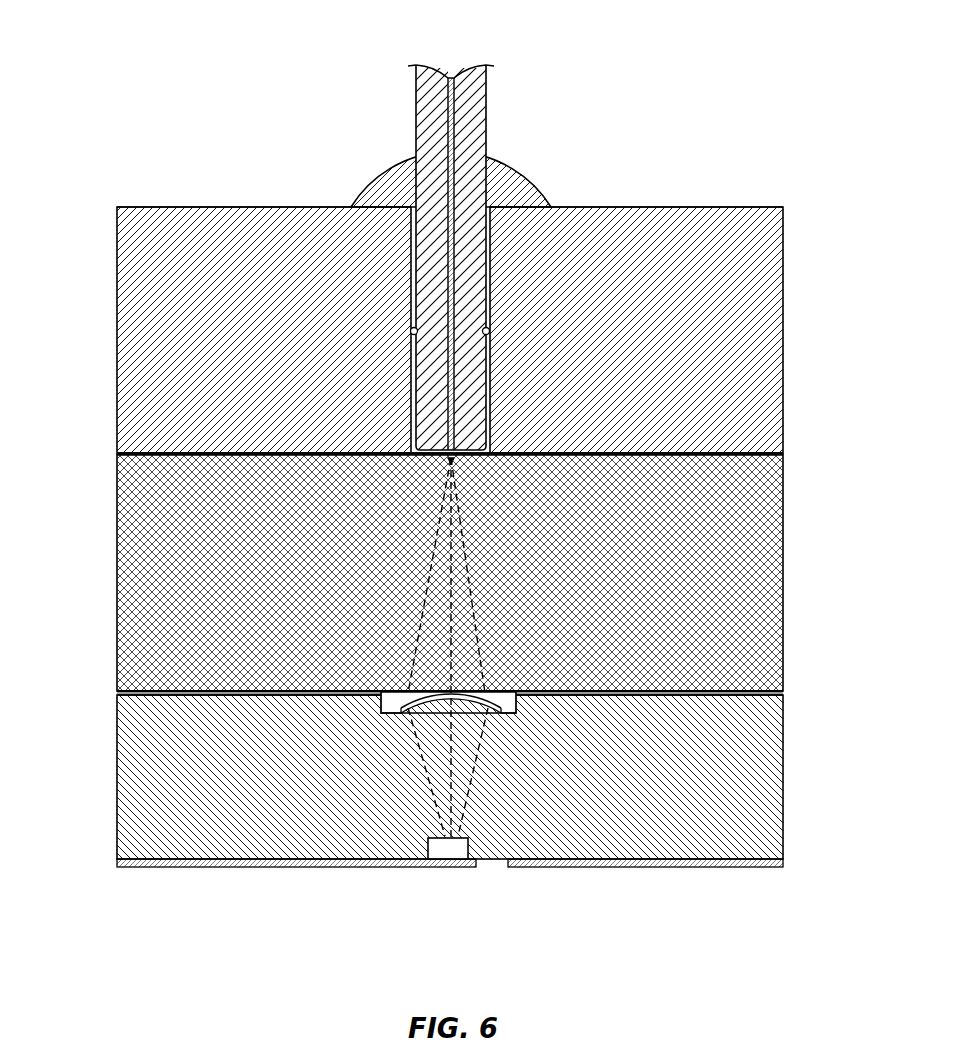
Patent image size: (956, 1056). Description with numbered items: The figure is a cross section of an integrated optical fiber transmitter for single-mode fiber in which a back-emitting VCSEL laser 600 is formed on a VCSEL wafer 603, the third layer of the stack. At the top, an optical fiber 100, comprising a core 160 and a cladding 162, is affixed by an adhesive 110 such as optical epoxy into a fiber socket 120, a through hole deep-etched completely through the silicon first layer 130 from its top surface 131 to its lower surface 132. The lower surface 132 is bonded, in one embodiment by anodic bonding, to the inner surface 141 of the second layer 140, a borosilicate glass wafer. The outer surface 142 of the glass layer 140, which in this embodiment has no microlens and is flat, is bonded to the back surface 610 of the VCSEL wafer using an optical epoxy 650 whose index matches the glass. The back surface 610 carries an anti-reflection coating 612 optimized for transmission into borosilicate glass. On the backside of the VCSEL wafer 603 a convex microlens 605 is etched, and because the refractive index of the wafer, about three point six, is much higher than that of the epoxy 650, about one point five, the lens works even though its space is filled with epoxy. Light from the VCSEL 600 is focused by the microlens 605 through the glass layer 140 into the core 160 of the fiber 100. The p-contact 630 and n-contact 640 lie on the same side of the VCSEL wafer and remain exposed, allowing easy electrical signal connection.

The optical fiber 100 is at (445, 239).
The adhesive 110 is at (377, 168).
The fiber socket 120 is at (404, 320).
The first layer 130 is at (138, 287).
The top surface 131 is at (250, 198).
The lower surface 132 is at (125, 448).
The second layer 140 is at (135, 572).
The inner surface 141 is at (137, 444).
The outer surface 142 is at (150, 690).
The core 160 is at (408, 75).
The cladding 162 is at (422, 118).
The back-emitting VCSEL laser 600 is at (425, 848).
The VCSEL wafer 603 is at (135, 770).
The microlens 605 is at (480, 702).
The back surface 610 is at (125, 683).
The anti-reflection coating 612 is at (140, 687).
The p-contact 630 is at (170, 858).
The n-contact 640 is at (680, 858).
The optical epoxy 650 is at (385, 690).